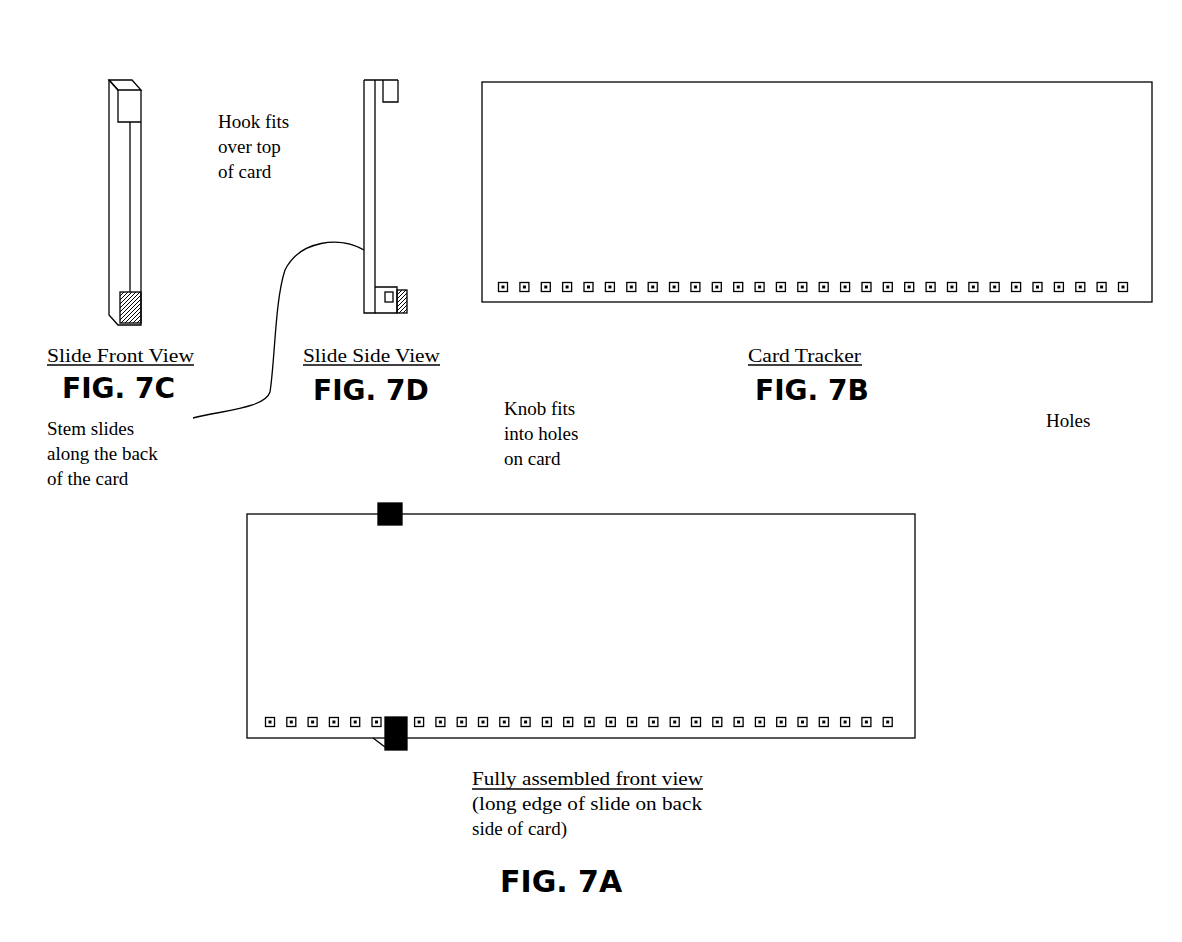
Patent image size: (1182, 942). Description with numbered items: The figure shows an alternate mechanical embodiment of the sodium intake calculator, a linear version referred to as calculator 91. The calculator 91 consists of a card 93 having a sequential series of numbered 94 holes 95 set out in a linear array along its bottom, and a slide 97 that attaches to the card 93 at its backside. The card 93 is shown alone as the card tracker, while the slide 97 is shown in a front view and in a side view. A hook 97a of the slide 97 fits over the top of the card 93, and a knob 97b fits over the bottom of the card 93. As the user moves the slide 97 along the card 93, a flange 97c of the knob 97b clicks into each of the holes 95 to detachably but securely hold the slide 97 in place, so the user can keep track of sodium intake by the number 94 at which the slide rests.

In FIG. 7A, the calculator 91 is at (661, 635).
In FIG. 7B, the card 93 is at (817, 219).
In FIG. 7B, the numbers 94 is at (510, 256).
In FIG. 7A, the numbers 94 is at (293, 700).
In FIG. 7B, the holes 95 is at (953, 293).
In FIG. 7A, the holes 95 is at (266, 728).
In FIG. 7C, the slide 97 is at (122, 202).
In FIG. 7D, the slide 97 is at (353, 214).
In FIG. 7C, the hook 97a is at (142, 100).
In FIG. 7A, the hook 97a is at (397, 503).
In FIG. 7C, the knob 97b is at (142, 315).
In FIG. 7D, the knob 97b is at (398, 100).
In FIG. 7A, the knob 97b is at (393, 750).
In FIG. 7D, the flange 97c is at (388, 292).